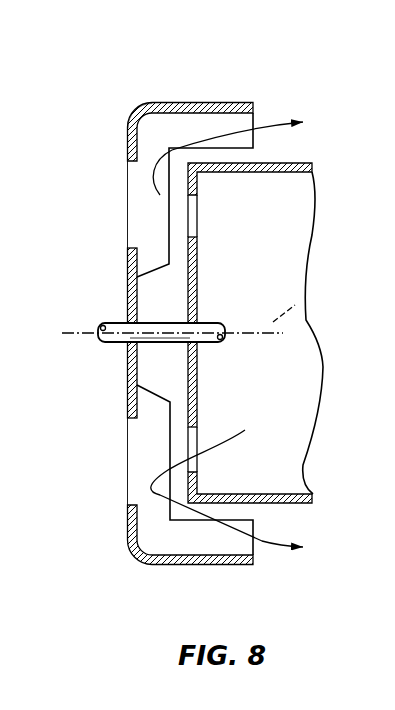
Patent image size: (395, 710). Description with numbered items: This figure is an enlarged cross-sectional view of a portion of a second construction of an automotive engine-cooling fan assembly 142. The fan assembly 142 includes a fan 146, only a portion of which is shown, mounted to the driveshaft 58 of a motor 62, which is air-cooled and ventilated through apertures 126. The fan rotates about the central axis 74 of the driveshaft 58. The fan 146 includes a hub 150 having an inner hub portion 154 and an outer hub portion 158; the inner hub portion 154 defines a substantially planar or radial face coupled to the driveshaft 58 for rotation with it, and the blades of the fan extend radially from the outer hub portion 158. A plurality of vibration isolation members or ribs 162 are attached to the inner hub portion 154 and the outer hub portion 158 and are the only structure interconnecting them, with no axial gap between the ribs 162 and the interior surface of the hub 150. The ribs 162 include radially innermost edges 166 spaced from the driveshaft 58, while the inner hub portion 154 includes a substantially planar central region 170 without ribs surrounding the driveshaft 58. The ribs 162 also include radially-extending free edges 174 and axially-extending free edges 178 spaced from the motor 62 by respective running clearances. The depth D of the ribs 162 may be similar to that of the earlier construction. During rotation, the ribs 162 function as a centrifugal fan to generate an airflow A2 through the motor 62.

The hub 150 is at (132, 62).
The fan assembly 142 is at (297, 47).
The outer hub portion 158 is at (135, 109).
The ribs 162 is at (192, 123).
The axially-extending free edges 178 is at (250, 157).
The radially-extending free edges 174 is at (190, 185).
The motor 62 is at (285, 172).
The central axis 74 is at (306, 303).
The apertures 126 is at (160, 195).
The radially innermost edges 166 is at (153, 268).
The inner hub portion 154 is at (128, 303).
The central region 170 is at (135, 372).
The driveshaft 58 is at (212, 322).
The fan 146 is at (110, 540).
The depth D is at (212, 437).
The airflow A2 is at (277, 120).